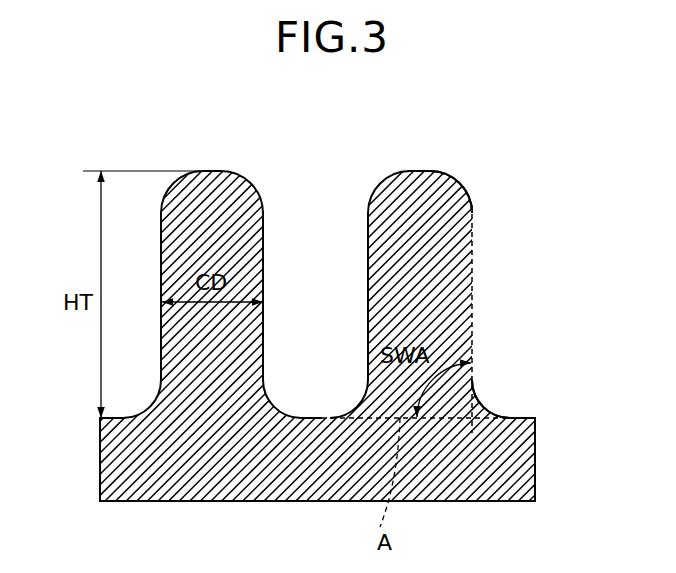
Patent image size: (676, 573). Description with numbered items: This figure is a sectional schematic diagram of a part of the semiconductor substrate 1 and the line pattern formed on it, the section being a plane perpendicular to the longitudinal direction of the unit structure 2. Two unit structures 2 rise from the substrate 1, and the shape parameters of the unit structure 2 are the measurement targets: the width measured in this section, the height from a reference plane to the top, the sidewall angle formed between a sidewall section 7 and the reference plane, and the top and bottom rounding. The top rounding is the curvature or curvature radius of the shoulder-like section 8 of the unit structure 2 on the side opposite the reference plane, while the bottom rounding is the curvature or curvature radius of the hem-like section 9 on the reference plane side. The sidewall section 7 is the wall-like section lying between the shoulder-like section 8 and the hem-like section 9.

The semiconductor substrate 1 is at (505, 462).
The unit structure 2 is at (379, 179).
The sidewall section 7 is at (472, 285).
The shoulder-like section 8 is at (463, 175).
The hem-like section 9 is at (492, 403).